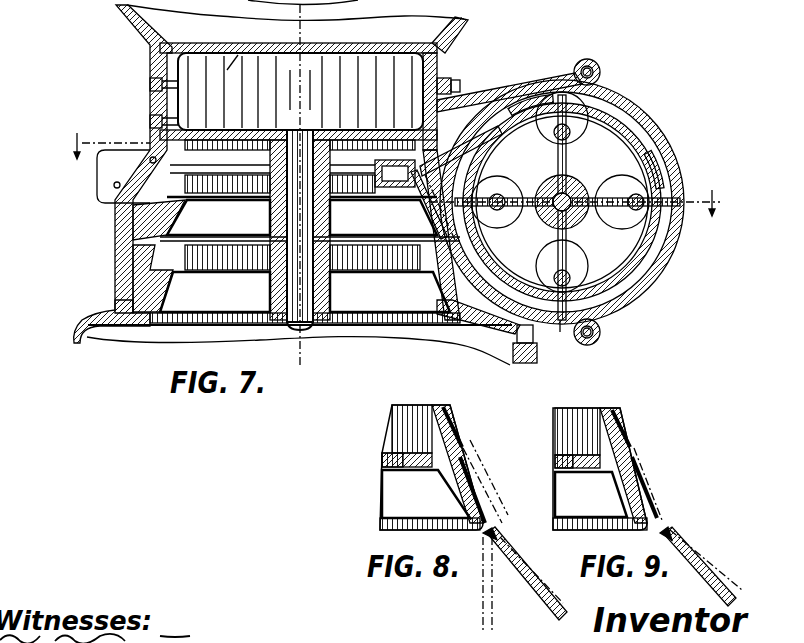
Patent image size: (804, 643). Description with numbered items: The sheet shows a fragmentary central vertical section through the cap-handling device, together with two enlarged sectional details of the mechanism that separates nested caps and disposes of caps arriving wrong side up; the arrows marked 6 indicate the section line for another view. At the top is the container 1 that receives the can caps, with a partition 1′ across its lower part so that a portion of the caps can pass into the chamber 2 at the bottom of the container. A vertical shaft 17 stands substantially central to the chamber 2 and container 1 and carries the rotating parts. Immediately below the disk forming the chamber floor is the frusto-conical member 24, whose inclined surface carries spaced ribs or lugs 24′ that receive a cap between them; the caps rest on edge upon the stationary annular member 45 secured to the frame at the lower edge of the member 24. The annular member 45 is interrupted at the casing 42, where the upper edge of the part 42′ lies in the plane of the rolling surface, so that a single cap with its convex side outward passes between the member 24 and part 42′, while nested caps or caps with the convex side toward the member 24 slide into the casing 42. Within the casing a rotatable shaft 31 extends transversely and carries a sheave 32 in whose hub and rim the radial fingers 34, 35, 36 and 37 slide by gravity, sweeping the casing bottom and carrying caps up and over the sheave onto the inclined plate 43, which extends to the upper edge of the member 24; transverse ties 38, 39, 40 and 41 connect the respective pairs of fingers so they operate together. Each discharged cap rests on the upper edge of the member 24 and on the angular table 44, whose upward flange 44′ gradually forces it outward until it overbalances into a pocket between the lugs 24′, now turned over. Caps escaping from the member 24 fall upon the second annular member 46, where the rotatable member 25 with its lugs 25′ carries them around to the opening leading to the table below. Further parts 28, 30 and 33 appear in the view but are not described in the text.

In FIG. 7, the container 1 is at (175, 24).
In FIG. 7, the partition 1′ is at (227, 70).
In FIG. 7, the chamber 2 is at (157, 63).
In FIG. 7, the section line 6 is at (394, 174).
In FIG. 7, the vertical shaft 17 is at (307, 323).
In FIG. 7, the frusto-conical member 24 is at (122, 195).
In FIG. 8, the frusto-conical member 24 is at (453, 418).
In FIG. 9, the frusto-conical member 24 is at (627, 430).
In FIG. 7, the ribs or lugs 24′ is at (147, 182).
In FIG. 8, the ribs or lugs 24′ is at (460, 435).
In FIG. 9, the ribs or lugs 24′ is at (628, 440).
In FIG. 7, the rotatable member 25 is at (150, 283).
In FIG. 7, the lugs 25′ is at (150, 293).
In FIG. 7, the side wall 28 is at (118, 251).
In FIG. 7, the partition 30 is at (157, 213).
In FIG. 7, the rotatable shaft 31 is at (582, 183).
In FIG. 7, the sheave 32 is at (650, 250).
In FIG. 7, the vertical shaft 33 is at (577, 225).
In FIG. 7, the radial finger 34 is at (572, 102).
In FIG. 7, the radial finger 35 is at (490, 180).
In FIG. 7, the radial finger 36 is at (558, 332).
In FIG. 7, the radial finger 37 is at (683, 198).
In FIG. 7, the transverse tie 38 is at (567, 133).
In FIG. 7, the transverse tie 39 is at (500, 193).
In FIG. 7, the transverse tie 40 is at (553, 280).
In FIG. 7, the transverse tie 41 is at (642, 195).
In FIG. 7, the casing 42 is at (632, 308).
In FIG. 8, the casing 42 is at (540, 603).
In FIG. 9, the casing 42 is at (717, 590).
In FIG. 8, the part of casing 42′ is at (493, 538).
In FIG. 9, the part of casing 42′ is at (667, 533).
In FIG. 7, the inclined plate 43 is at (467, 132).
In FIG. 7, the angular table 44 is at (445, 145).
In FIG. 7, the upward flange 44′ is at (448, 78).
In FIG. 7, the stationary annular member 45 is at (118, 231).
In FIG. 7, the second annular member 46 is at (110, 333).